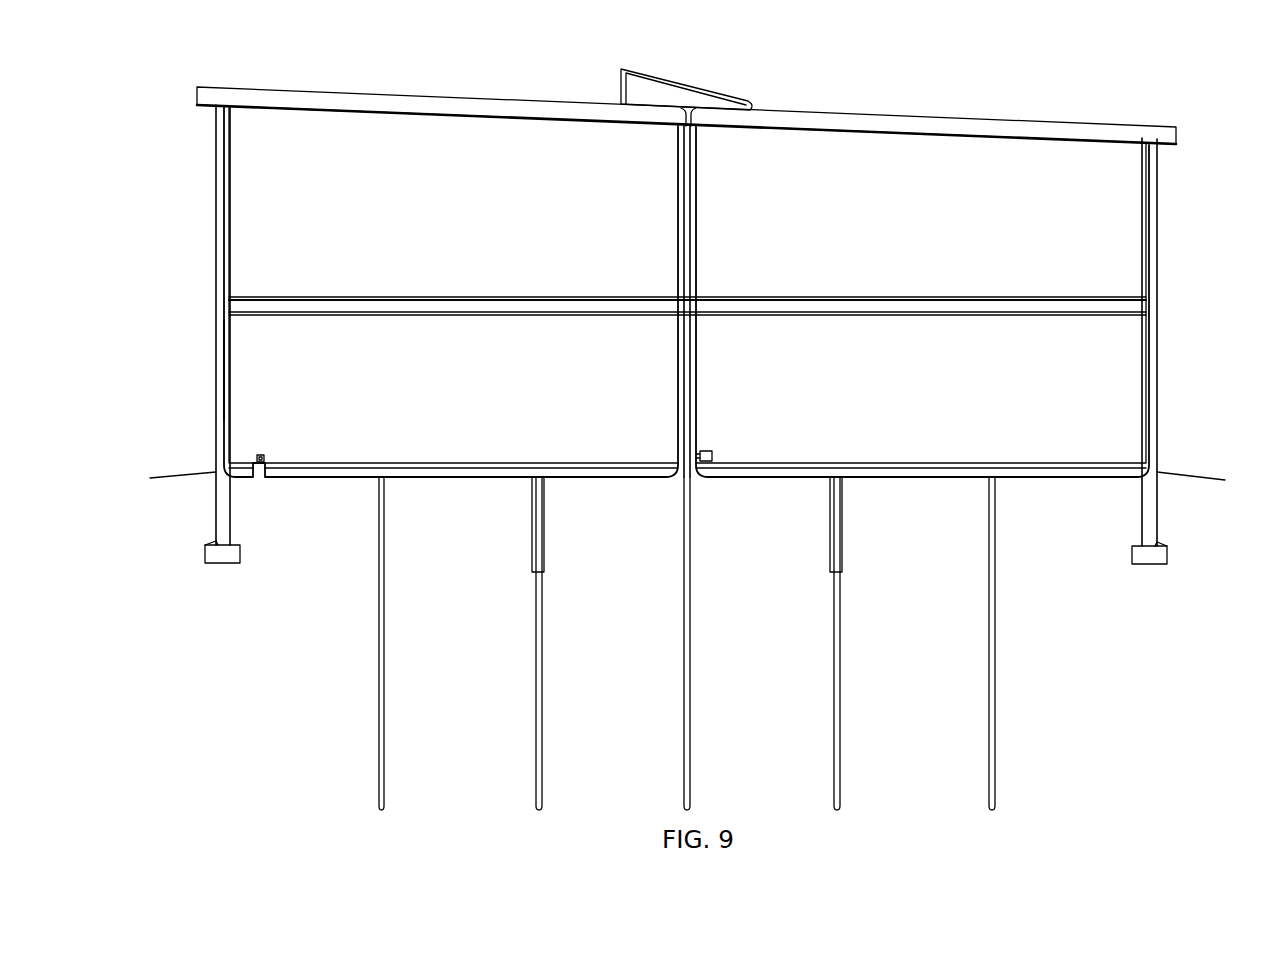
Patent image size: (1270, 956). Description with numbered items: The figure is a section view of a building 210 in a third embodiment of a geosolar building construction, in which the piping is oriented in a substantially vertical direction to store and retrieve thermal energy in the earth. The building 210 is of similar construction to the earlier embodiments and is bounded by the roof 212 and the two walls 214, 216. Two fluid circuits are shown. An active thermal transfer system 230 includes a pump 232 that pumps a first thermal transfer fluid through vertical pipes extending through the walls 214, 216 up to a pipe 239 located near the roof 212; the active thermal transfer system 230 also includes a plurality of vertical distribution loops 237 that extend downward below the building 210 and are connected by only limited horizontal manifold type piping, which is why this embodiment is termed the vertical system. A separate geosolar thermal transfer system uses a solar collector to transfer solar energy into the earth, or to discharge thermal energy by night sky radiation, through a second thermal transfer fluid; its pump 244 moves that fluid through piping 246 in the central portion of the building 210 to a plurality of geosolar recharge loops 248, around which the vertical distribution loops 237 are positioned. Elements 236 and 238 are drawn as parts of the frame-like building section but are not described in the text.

The building 210 is at (679, 422).
The roof 212 is at (901, 120).
The wall 214 is at (215, 275).
The wall 216 is at (1158, 270).
The active thermal transfer system 230 is at (686, 321).
The pump 232 is at (263, 457).
The bottom frame member 236 is at (310, 476).
The vertical distribution loops 237 is at (381, 600).
The side frame member 238 is at (227, 418).
The pipe 239 is at (478, 130).
The pump 244 is at (712, 456).
The piping 246 is at (687, 402).
The geosolar recharge loops 248 is at (535, 657).